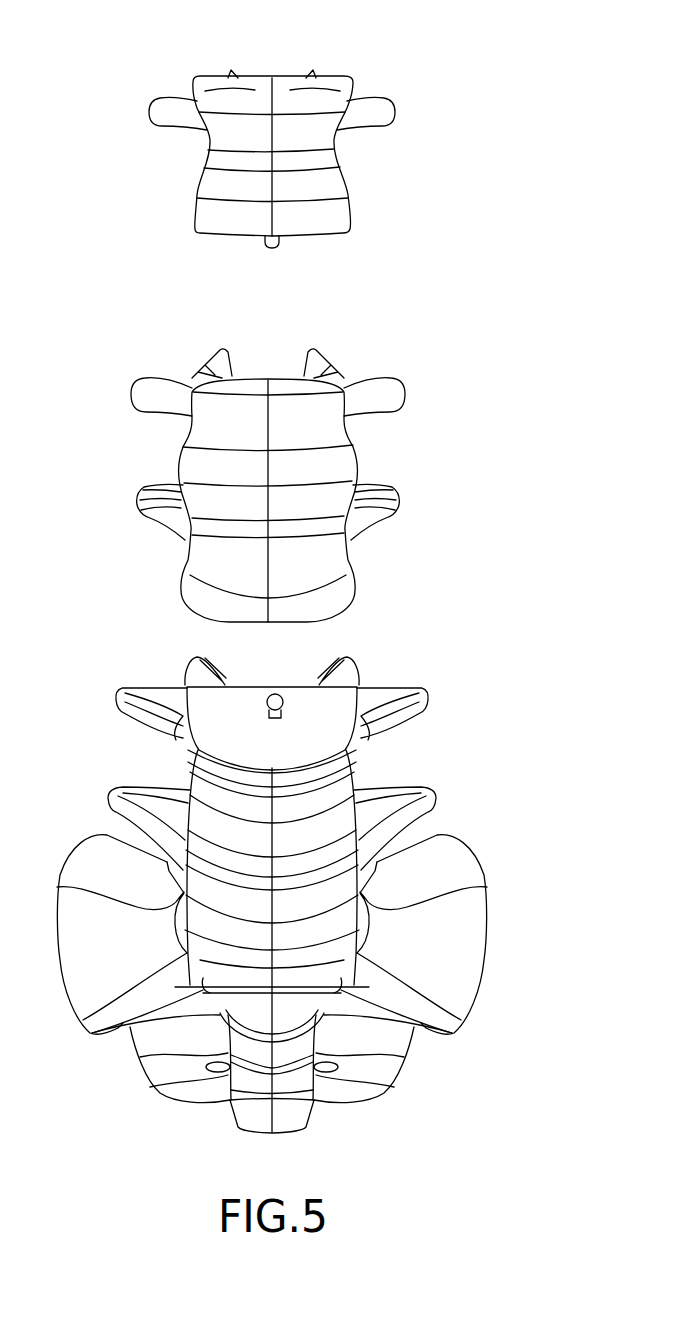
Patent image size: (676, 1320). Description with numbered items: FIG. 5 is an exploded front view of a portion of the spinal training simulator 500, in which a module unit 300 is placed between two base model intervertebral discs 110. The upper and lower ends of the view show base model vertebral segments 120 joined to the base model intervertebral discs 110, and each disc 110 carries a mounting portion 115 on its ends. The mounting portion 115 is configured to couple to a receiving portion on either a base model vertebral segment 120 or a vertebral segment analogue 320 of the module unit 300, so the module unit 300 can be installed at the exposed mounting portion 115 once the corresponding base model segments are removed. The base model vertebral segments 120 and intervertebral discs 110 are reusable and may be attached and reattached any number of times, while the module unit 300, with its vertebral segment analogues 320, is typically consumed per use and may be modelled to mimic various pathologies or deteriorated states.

The spinal training simulator 500 is at (438, 99).
The base model intervertebral disc 110 is at (193, 215).
The mounting portion 115 is at (277, 246).
The vertebral segment 120 is at (212, 156).
The module unit 300 is at (118, 350).
The vertebral segment analogue 320 is at (353, 448).